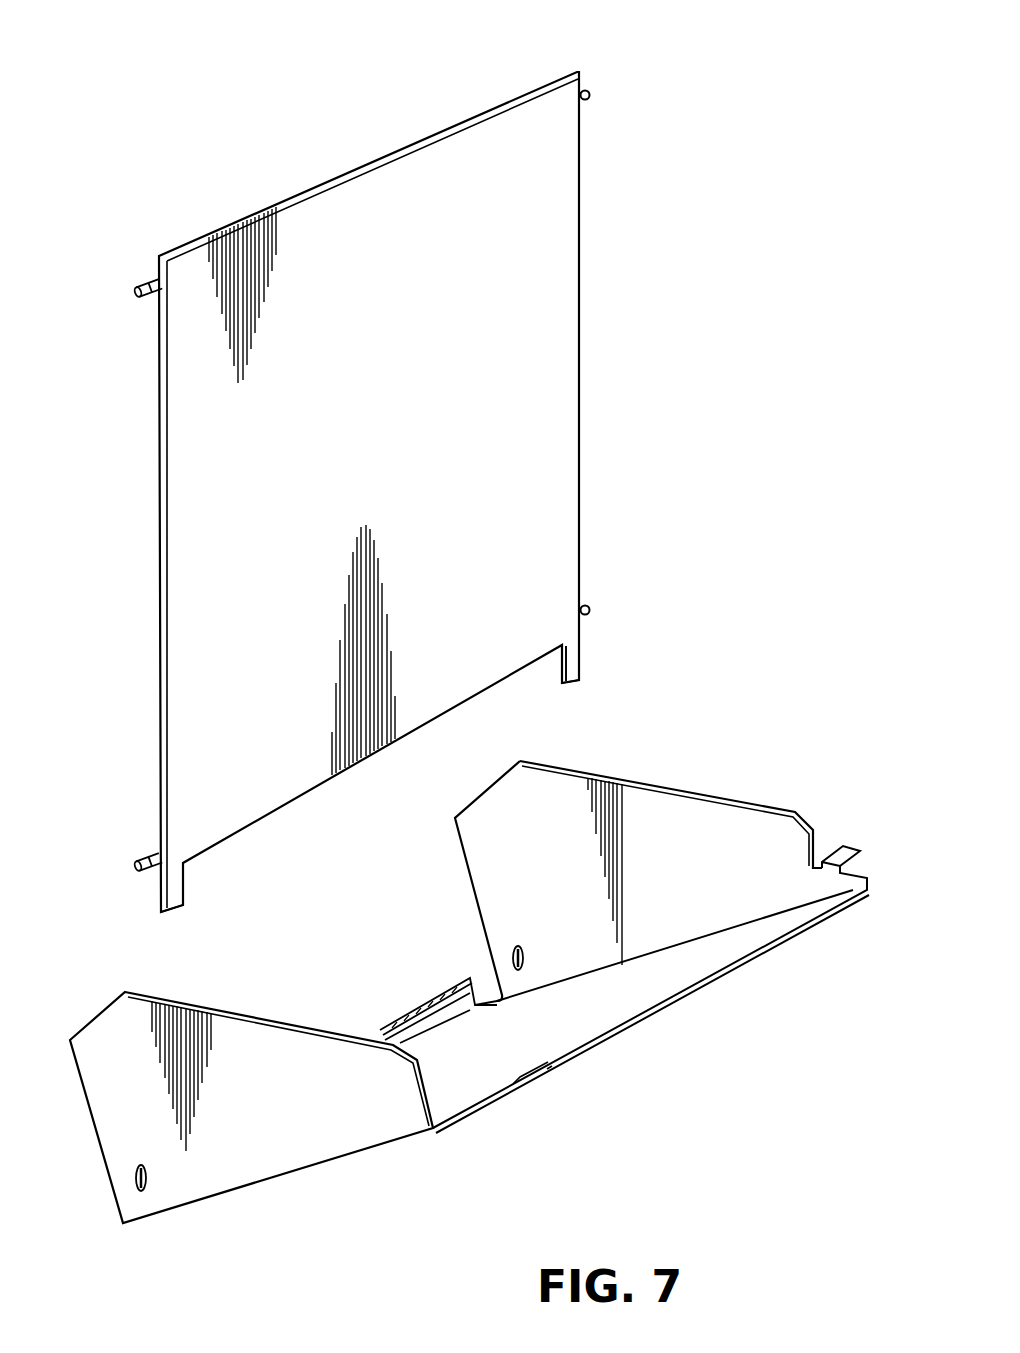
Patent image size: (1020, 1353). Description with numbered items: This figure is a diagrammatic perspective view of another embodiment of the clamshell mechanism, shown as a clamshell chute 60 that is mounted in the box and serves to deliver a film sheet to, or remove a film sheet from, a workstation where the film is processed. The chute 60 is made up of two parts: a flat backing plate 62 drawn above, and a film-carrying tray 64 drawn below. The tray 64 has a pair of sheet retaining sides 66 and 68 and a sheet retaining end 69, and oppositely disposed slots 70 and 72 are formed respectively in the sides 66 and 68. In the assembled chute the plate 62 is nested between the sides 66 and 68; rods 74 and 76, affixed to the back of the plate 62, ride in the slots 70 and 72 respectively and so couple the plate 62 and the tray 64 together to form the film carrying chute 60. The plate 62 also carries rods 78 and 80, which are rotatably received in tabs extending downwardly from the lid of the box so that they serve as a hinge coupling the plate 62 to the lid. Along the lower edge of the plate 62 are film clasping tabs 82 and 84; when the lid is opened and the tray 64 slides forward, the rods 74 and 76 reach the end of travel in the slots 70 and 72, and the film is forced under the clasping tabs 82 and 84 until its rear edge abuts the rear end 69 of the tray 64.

The clamshell chute 60 is at (732, 562).
The flat backing plate 62 is at (498, 420).
The film-carrying tray 64 is at (695, 962).
The sheet retaining side 66 is at (297, 1060).
The sheet retaining side 68 is at (742, 828).
The sheet retaining end 69 is at (413, 1008).
The slot 70 is at (136, 1191).
The slot 72 is at (528, 971).
The rod 74 is at (144, 858).
The rod 76 is at (589, 608).
The rod 78 is at (135, 297).
The rod 80 is at (589, 93).
The clasping tab 82 is at (184, 886).
The clasping tab 84 is at (574, 666).